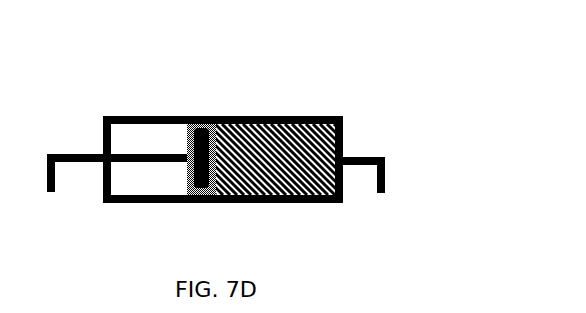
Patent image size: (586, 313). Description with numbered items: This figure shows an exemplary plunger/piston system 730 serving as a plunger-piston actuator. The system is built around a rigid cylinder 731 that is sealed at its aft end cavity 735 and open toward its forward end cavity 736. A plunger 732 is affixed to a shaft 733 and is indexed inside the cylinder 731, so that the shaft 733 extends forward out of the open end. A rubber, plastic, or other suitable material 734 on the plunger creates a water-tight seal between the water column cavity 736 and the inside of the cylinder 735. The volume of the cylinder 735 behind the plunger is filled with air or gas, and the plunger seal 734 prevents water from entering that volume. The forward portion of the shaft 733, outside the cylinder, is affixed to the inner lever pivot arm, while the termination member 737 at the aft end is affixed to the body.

The plunger/piston system 730 is at (68, 100).
The rigid cylinder 731 is at (284, 116).
The plunger 732 is at (220, 203).
The shaft 733 is at (80, 163).
The plunger seal 734 is at (214, 118).
The aft end cavity 735 is at (297, 160).
The forward end cavity 736 is at (143, 137).
The termination member 737 is at (367, 167).